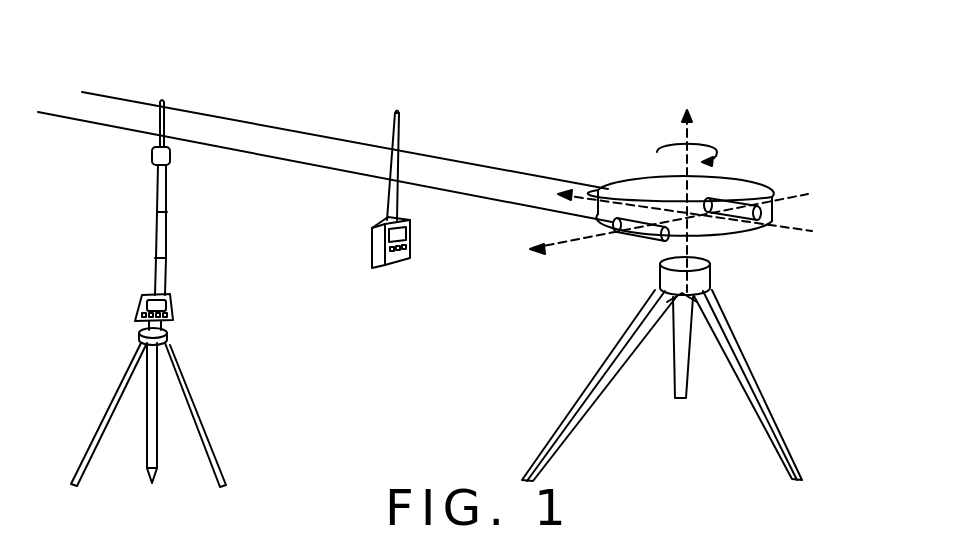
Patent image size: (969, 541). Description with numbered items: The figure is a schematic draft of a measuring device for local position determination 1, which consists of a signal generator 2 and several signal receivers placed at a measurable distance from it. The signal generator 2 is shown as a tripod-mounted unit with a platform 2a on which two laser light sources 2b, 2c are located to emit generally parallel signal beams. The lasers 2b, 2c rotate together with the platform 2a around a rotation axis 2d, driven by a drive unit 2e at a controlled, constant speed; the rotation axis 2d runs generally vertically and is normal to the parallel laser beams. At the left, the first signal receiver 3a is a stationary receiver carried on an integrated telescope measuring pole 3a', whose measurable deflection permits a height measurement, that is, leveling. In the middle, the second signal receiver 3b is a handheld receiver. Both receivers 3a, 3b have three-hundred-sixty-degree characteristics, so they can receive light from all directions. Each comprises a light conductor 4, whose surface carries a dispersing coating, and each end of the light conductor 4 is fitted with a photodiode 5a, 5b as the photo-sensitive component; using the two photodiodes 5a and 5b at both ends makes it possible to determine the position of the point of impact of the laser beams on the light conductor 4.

The measuring device for local position determination 1 is at (432, 54).
The signal generator 2 is at (674, 248).
The platform 2a is at (737, 188).
The laser light source 2b is at (633, 240).
The laser light source 2c is at (775, 207).
The rotation axis 2d is at (685, 123).
The drive unit 2e is at (712, 272).
The first signal receiver 3a is at (150, 281).
The integrated telescope measuring pole 3a' is at (111, 215).
The second signal receiver 3b is at (395, 169).
The light conductor 4 is at (399, 140).
The photodiode 5a is at (396, 110).
The photodiode 5b is at (380, 199).